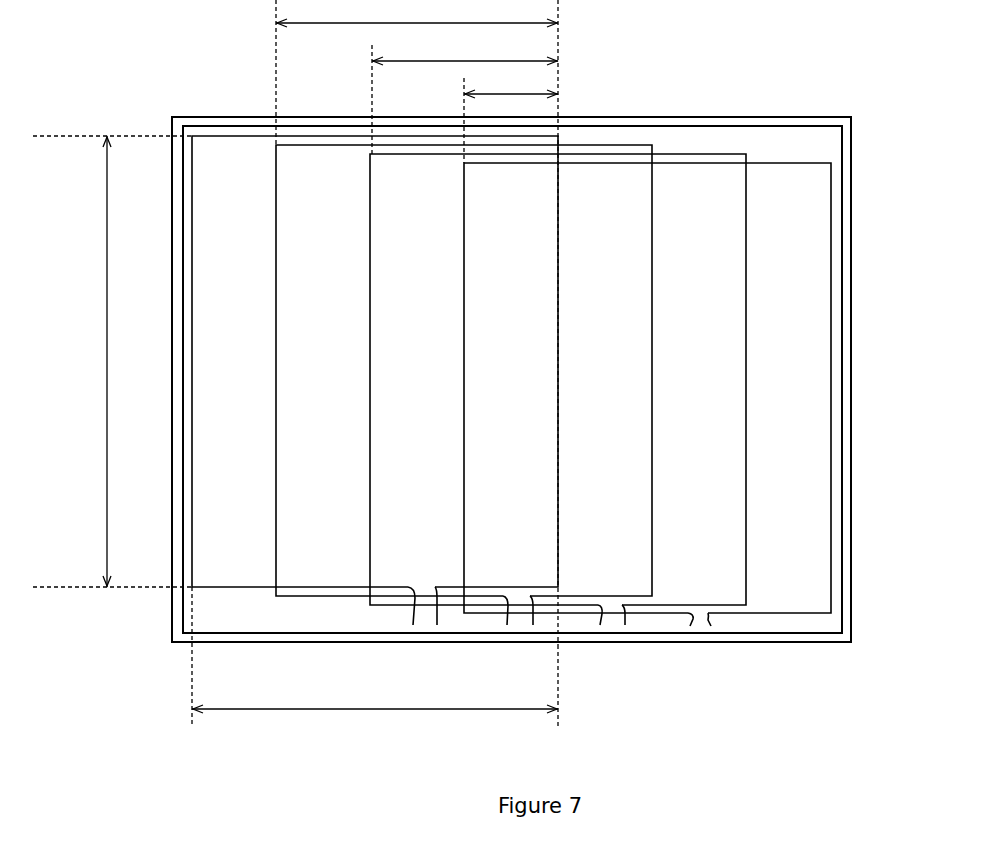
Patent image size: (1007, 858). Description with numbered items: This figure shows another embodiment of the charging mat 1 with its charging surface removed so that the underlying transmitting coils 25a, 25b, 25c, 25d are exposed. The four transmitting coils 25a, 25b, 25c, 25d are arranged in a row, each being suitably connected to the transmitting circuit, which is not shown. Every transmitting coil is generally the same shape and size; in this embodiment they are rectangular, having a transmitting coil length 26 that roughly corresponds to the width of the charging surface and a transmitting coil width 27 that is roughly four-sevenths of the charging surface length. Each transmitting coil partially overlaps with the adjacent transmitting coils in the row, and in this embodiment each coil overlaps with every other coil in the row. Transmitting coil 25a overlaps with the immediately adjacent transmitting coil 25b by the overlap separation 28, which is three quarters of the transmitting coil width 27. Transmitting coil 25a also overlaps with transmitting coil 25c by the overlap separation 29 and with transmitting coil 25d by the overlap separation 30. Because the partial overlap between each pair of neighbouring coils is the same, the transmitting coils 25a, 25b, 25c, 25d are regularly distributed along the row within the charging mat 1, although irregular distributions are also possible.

The charging mat 1 is at (745, 115).
The transmitting coil 25a is at (243, 135).
The transmitting coil 25b is at (577, 597).
The transmitting coil 25c is at (722, 605).
The transmitting coil 25d is at (785, 613).
The transmitting coil length 26 is at (112, 361).
The transmitting coil width 27 is at (375, 661).
The overlap separation 28 is at (417, 322).
The overlap separation 29 is at (465, 98).
The overlap separation 30 is at (511, 118).